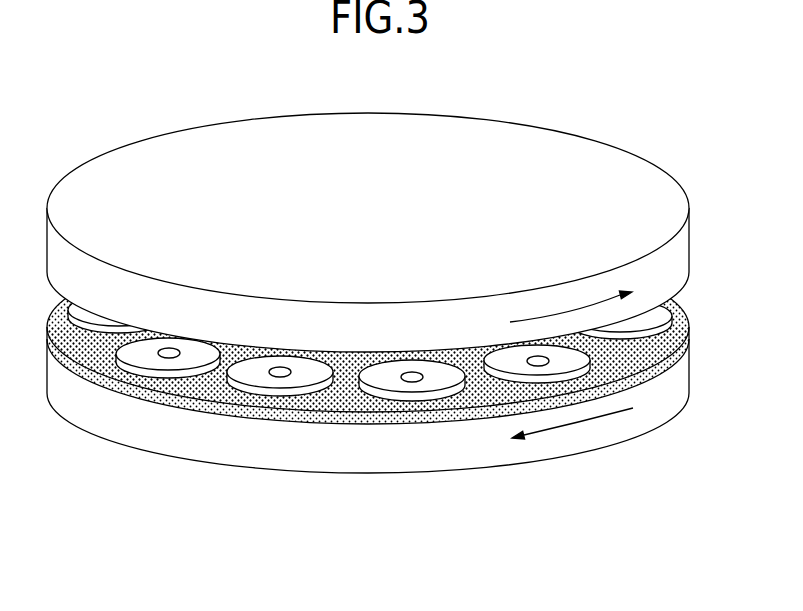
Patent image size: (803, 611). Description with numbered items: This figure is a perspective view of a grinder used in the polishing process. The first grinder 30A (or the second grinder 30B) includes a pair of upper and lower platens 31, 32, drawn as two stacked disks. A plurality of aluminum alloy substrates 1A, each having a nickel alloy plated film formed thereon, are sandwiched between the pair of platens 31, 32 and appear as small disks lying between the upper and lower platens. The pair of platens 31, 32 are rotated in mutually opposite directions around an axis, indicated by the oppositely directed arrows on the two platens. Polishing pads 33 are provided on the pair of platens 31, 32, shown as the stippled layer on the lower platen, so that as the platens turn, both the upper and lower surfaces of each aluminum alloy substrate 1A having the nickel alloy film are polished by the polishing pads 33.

The first grinder 30A is at (379, 300).
The second grinder 30B is at (379, 300).
The platen 31 is at (673, 383).
The platen 32 is at (618, 167).
The polishing pad 33 is at (481, 387).
The aluminum alloy substrate 1A is at (244, 388).